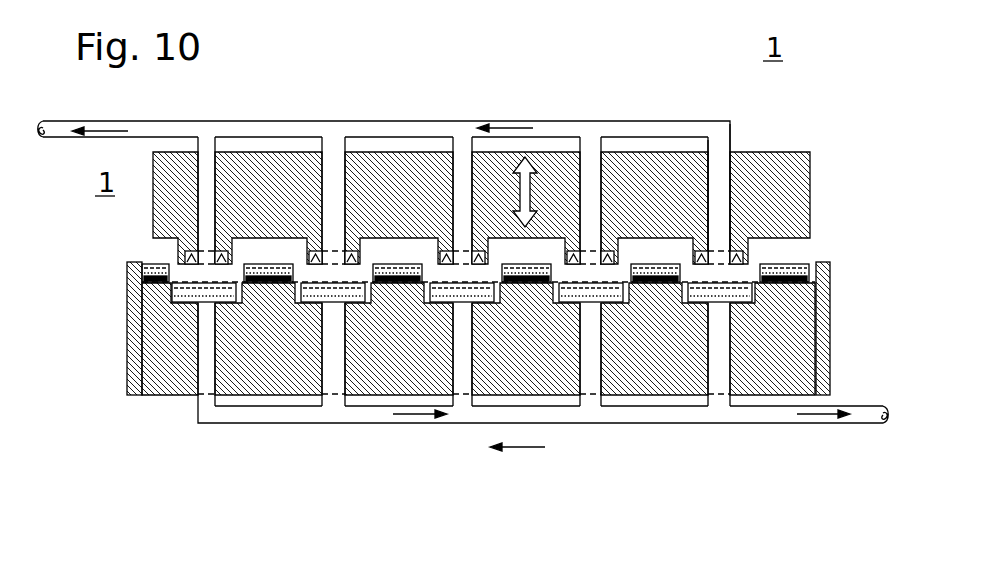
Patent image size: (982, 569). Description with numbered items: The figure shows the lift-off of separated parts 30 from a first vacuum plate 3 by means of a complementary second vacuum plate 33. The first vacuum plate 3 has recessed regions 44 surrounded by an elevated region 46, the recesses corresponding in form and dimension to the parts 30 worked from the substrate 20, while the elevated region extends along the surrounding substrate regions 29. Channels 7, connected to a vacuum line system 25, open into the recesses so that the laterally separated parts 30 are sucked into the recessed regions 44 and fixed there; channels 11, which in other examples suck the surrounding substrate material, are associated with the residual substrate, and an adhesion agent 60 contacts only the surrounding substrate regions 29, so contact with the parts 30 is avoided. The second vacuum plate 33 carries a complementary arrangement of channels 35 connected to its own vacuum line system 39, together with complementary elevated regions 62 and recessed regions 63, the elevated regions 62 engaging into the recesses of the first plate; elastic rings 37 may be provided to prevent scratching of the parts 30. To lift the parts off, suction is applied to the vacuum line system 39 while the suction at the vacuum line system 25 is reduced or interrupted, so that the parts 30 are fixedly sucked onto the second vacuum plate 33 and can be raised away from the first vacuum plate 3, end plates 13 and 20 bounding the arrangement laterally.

The first vacuum plate 3 is at (148, 342).
The channels 7 is at (318, 396).
The channels 11 is at (636, 401).
The left end plate 13 is at (127, 270).
The substrate 20 is at (762, 273).
The vacuum line system 25 is at (837, 424).
The surrounding substrate regions 29 is at (400, 280).
The parts 30 is at (452, 305).
The second vacuum plate 33 is at (776, 160).
The channels 35 is at (718, 167).
The elastic rings 37 is at (707, 247).
The vacuum line system 39 is at (600, 118).
The recessed regions 44 is at (277, 284).
The elevated region 46 is at (173, 305).
The adhesion agent 60 is at (657, 284).
The elevated regions 62 is at (320, 250).
The recessed regions 63 is at (400, 237).